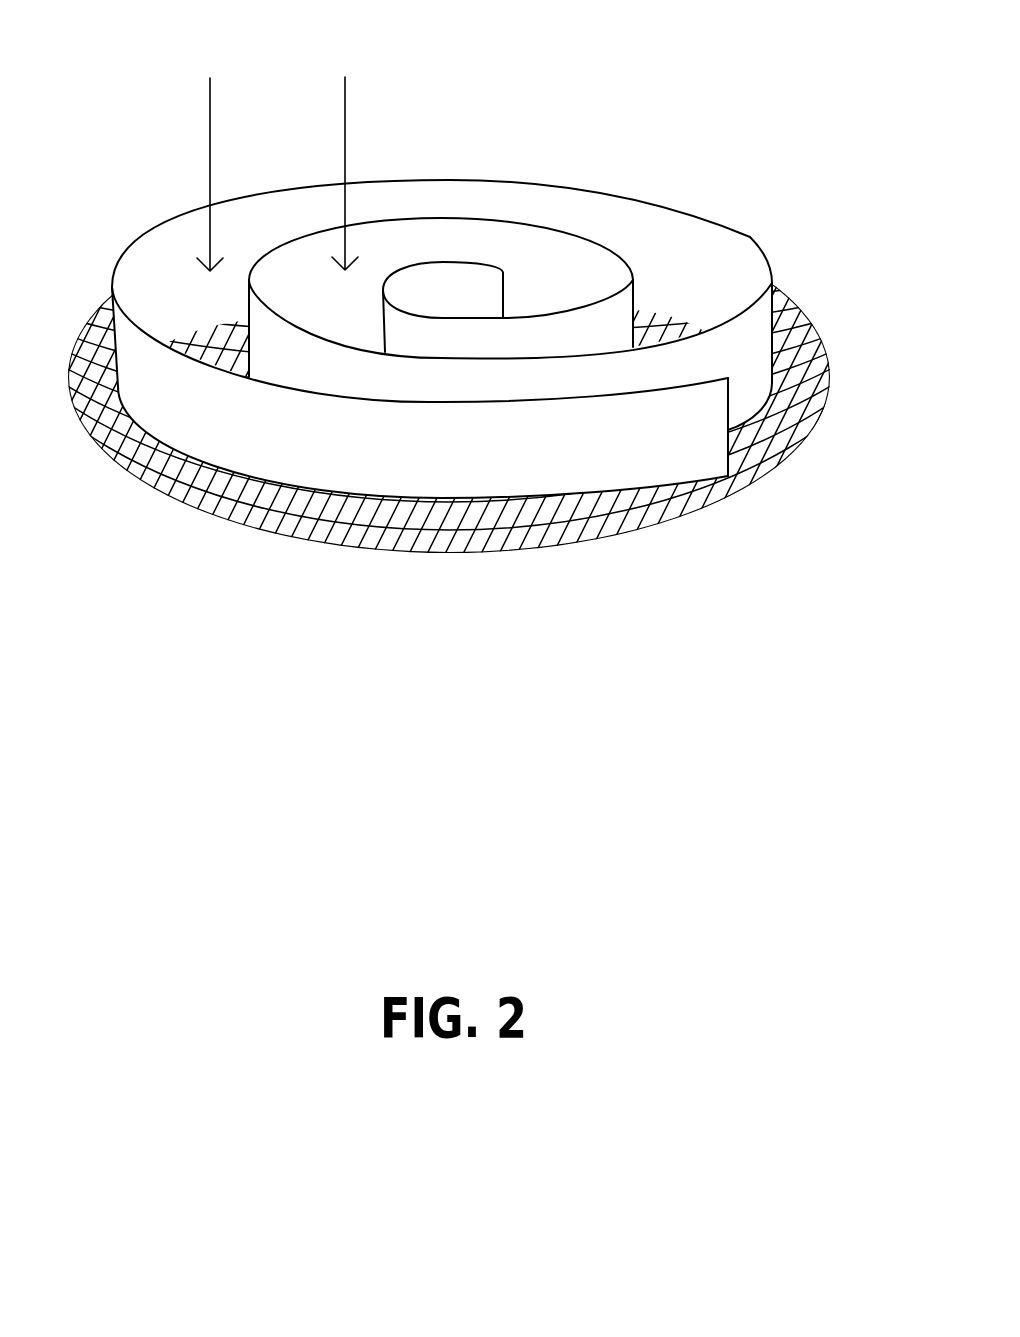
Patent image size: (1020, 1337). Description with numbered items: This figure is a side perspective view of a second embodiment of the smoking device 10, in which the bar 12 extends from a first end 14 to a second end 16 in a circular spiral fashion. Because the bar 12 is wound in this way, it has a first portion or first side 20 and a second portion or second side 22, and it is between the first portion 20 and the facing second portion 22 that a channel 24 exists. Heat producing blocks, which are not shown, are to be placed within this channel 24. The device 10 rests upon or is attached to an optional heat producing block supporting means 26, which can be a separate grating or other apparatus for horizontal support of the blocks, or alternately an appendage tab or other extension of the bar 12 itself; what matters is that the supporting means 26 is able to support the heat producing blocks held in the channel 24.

The smoking device 10 is at (510, 397).
The bar 12 is at (750, 238).
The first end 14 is at (728, 423).
The second end 16 is at (505, 292).
The first portion 20 is at (722, 297).
The second portion 22 is at (527, 454).
The channel 24 is at (279, 155).
The heat producing block supporting means 26 is at (830, 380).